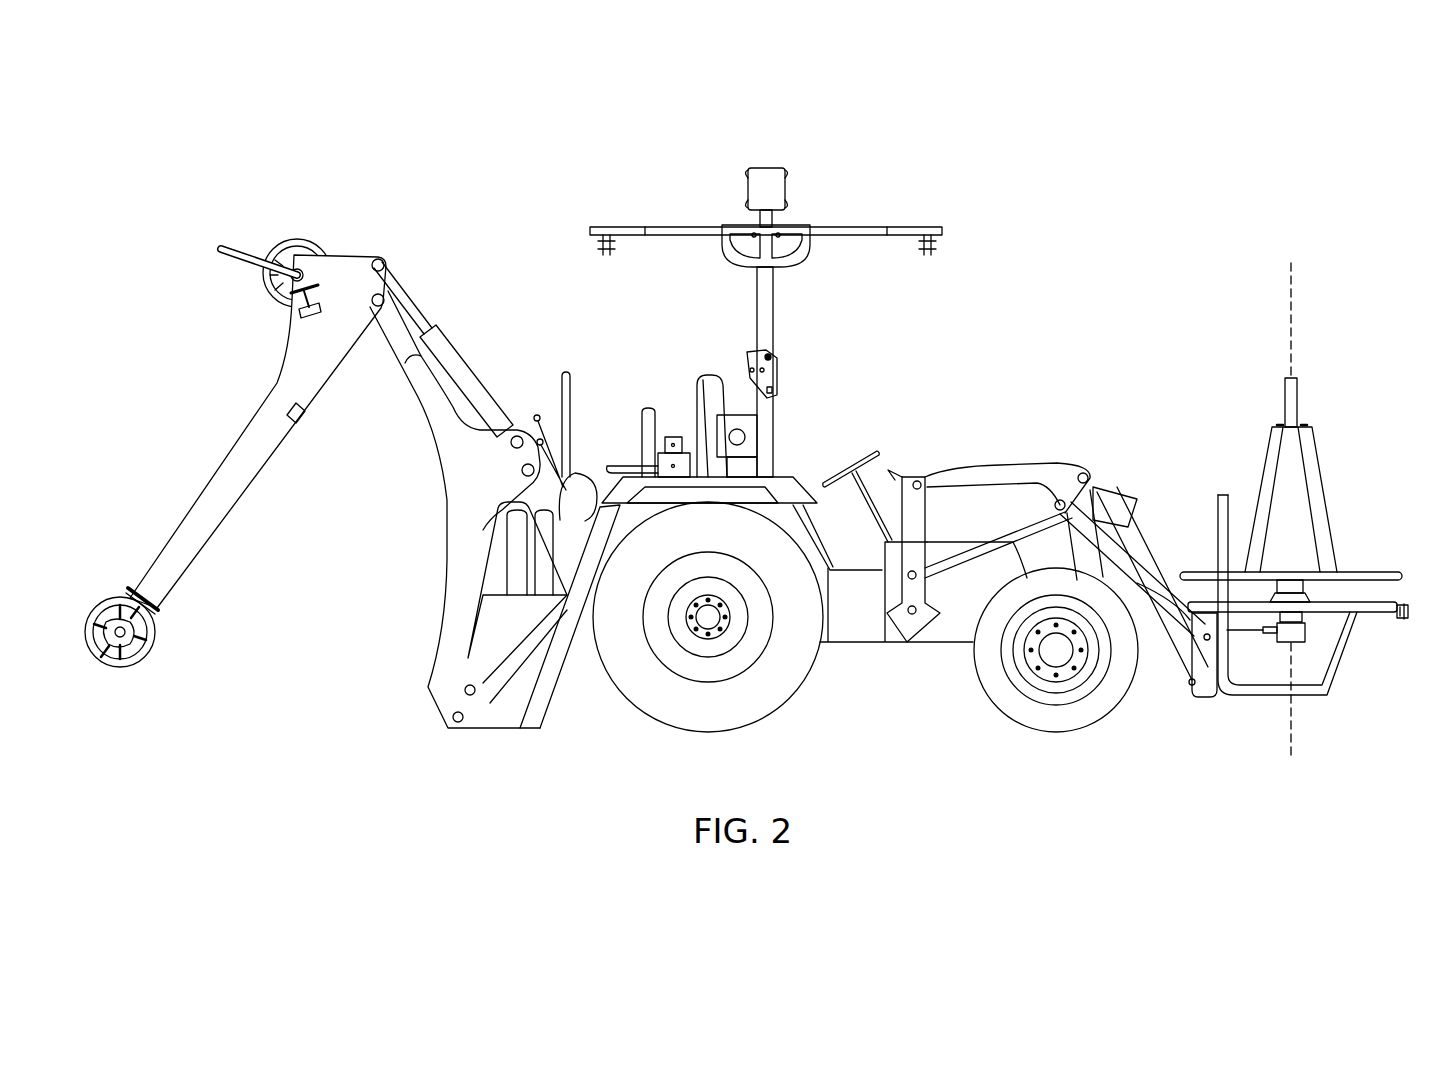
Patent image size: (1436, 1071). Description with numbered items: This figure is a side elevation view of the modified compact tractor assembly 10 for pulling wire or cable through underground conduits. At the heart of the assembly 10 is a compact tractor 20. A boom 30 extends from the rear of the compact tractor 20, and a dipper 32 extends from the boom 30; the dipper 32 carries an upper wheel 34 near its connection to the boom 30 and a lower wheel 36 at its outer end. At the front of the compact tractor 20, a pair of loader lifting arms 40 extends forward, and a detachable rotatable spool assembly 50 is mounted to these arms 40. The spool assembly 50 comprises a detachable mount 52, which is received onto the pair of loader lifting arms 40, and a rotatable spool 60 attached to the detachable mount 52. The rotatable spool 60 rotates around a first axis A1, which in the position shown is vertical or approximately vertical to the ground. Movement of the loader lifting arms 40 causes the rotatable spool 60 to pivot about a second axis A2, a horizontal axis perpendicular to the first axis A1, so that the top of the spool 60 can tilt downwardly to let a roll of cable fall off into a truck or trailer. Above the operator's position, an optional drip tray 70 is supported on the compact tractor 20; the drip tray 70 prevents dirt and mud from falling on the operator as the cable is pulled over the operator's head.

The assembly 10 is at (1172, 198).
The compact tractor 20 is at (1112, 490).
The boom 30 is at (433, 410).
The dipper 32 is at (258, 437).
The upper wheel 34 is at (296, 238).
The lower wheel 36 is at (158, 641).
The loader lifting arms 40 is at (1130, 587).
The detachable rotatable spool assembly 50 is at (1329, 464).
The detachable mount 52 is at (1223, 493).
The rotatable spool 60 is at (1332, 535).
The drip tray 70 is at (877, 174).
The first axis A1 is at (1292, 332).
The second axis A2 is at (1190, 682).